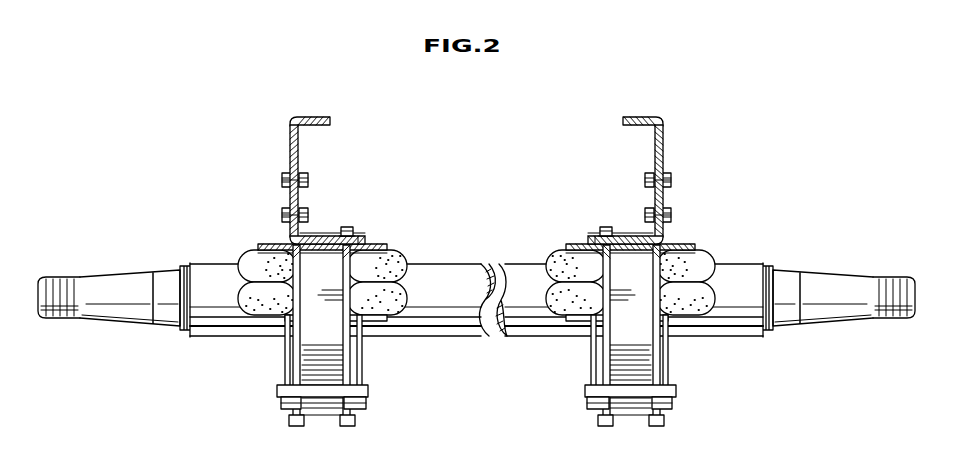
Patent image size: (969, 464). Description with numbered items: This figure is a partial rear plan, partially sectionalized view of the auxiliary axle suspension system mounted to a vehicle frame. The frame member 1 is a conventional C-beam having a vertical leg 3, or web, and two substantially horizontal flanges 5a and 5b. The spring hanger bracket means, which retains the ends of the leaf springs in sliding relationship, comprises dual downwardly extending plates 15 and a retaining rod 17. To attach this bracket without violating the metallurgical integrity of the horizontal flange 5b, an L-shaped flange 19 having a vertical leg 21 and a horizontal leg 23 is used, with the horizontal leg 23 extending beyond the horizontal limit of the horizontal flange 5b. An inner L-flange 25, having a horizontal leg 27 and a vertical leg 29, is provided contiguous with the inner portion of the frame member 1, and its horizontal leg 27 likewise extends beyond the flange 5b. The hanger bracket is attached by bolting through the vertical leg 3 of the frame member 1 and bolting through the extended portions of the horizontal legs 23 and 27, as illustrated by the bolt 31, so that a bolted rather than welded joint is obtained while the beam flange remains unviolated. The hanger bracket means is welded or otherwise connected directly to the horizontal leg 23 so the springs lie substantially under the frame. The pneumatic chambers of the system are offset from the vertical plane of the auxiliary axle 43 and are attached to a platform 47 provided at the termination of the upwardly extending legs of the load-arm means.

The frame member 1 is at (487, 164).
The vertical leg 3 is at (665, 140).
The horizontal flange 5a is at (313, 117).
The horizontal flange 5b is at (322, 245).
The downwardly extending plates 15 is at (298, 372).
The retaining rod 17 is at (330, 418).
The L-shaped flange 19 is at (289, 197).
The vertical leg 21 is at (285, 172).
The horizontal leg 23 is at (383, 248).
The inner L-flange 25 is at (316, 236).
The horizontal leg 27 is at (363, 240).
The vertical leg 29 is at (303, 197).
The bolt 31 is at (347, 227).
The auxiliary axle 43 is at (460, 265).
The platform 47 is at (379, 321).